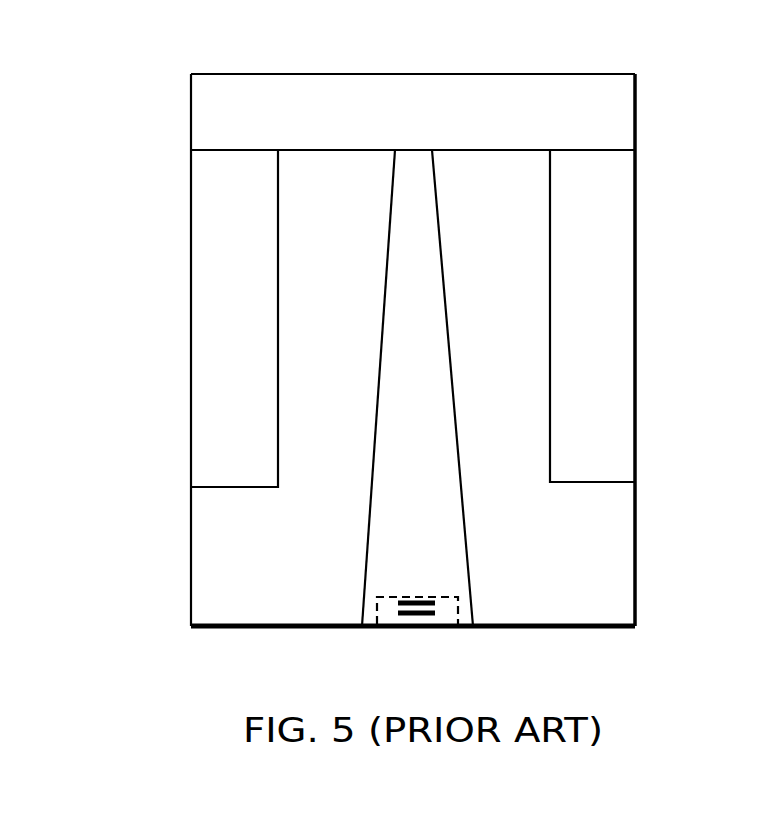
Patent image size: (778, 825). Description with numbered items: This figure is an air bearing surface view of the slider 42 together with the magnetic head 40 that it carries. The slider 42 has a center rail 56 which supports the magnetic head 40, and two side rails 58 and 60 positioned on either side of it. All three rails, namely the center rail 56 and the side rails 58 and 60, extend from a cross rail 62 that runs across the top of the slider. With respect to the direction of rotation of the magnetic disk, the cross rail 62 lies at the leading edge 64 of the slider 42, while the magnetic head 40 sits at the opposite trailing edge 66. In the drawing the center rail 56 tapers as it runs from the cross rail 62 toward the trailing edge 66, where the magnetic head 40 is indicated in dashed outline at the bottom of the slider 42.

The magnetic head 40 is at (387, 630).
The slider 42 is at (190, 570).
The center rail 56 is at (400, 263).
The side rail 58 is at (204, 226).
The side rail 60 is at (608, 219).
The cross rail 62 is at (323, 83).
The leading edge 64 is at (479, 72).
The trailing edge 66 is at (537, 629).